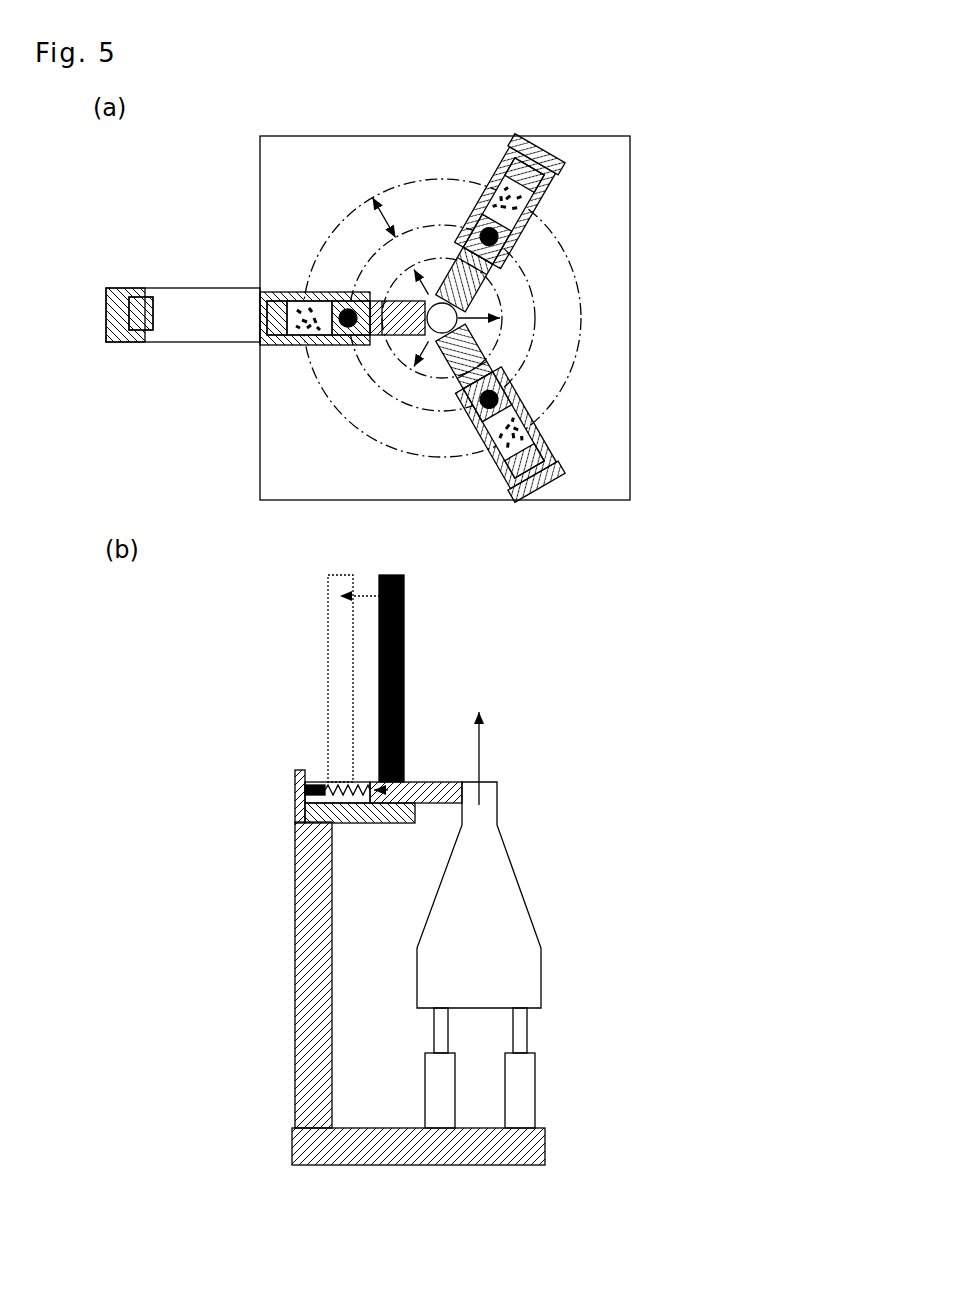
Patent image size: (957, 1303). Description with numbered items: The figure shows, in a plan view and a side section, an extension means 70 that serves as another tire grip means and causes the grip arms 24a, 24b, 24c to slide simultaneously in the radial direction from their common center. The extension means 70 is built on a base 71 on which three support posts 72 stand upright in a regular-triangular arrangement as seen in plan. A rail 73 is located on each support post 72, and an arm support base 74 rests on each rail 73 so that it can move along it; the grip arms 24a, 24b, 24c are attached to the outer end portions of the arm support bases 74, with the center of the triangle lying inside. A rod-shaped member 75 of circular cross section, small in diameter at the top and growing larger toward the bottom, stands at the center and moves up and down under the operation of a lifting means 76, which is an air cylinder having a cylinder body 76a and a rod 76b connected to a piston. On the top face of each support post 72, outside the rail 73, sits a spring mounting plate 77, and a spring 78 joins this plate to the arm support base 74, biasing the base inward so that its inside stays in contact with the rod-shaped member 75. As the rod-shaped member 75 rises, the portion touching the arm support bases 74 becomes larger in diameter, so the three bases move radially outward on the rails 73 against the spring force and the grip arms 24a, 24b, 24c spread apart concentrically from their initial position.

The extension means 70 is at (494, 637).
The base 71 is at (608, 258).
The support post 72 is at (305, 1035).
The rail 73 is at (113, 289).
The arm support base 74 is at (150, 314).
The rod-shaped member 75 is at (487, 307).
The lifting means 76 is at (542, 1068).
The cylinder body 76a is at (512, 1082).
The drive pin 76b is at (520, 1041).
The spring mounting plate 77 is at (256, 324).
The spring 78 is at (283, 300).
The grip arm 24a is at (270, 352).
The grip arm 24b is at (489, 399).
The grip arm 24c is at (489, 236).